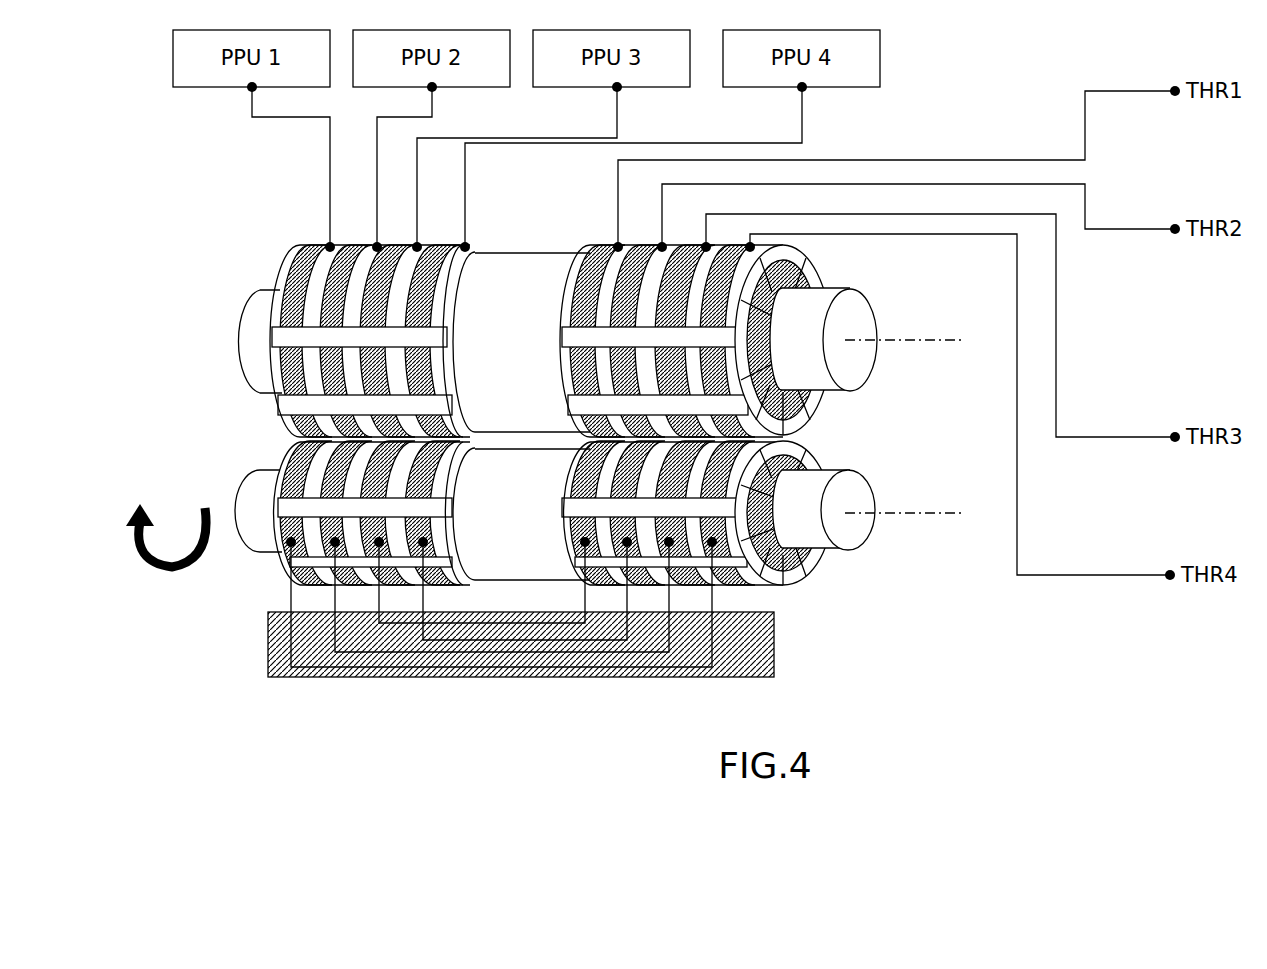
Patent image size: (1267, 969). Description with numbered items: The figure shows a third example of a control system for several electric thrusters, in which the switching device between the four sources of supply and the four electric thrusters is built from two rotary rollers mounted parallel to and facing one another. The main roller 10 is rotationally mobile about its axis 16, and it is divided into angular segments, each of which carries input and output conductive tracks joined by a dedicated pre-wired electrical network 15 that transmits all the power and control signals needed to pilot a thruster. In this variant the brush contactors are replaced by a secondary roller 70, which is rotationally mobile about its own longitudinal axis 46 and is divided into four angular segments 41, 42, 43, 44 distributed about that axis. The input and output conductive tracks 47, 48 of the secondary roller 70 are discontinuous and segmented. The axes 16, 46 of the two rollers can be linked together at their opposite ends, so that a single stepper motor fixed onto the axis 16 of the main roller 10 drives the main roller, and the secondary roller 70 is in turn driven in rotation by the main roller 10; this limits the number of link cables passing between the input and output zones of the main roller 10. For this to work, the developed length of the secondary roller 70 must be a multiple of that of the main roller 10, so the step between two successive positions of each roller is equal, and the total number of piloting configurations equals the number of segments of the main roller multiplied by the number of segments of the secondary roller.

The main roller 10 is at (546, 576).
The dedicated pre-wired electrical network 15 is at (750, 656).
The axis of the main roller 16 is at (952, 512).
The angular segment of the secondary roller 41 is at (776, 274).
The angular segment of the secondary roller 42 is at (800, 438).
The angular segment of the secondary roller 43 is at (818, 433).
The angular segment of the secondary roller 44 is at (822, 411).
The longitudinal axis of the secondary roller 46 is at (912, 341).
The input conductive tracks of the secondary roller 47 is at (300, 262).
The output conductive tracks of the secondary roller 48 is at (604, 247).
The secondary roller 70 is at (536, 250).